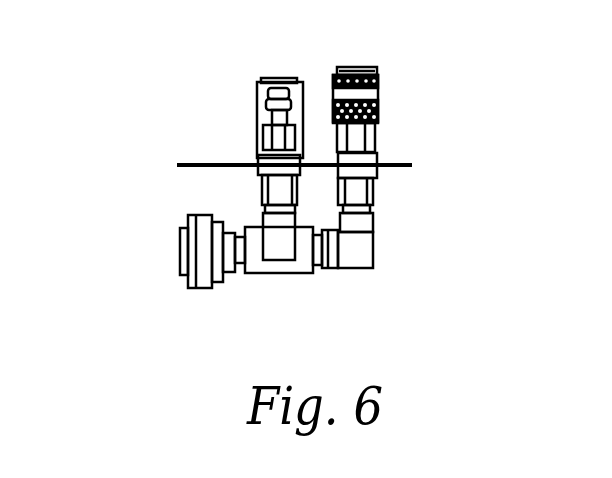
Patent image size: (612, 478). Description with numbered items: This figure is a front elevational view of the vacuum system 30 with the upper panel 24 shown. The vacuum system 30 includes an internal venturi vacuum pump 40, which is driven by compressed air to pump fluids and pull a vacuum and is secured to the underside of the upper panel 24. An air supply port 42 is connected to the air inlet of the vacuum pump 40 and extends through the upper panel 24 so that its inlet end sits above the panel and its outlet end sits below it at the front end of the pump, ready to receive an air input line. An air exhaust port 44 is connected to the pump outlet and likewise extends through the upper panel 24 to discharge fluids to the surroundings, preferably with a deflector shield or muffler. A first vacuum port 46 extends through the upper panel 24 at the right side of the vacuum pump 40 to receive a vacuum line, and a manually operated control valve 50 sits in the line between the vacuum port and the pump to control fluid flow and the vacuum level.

The vacuum system 30 is at (126, 172).
The upper panel 24 is at (400, 160).
The vacuum pump 40 is at (295, 273).
The air supply port 42 is at (260, 126).
The air exhaust port 44 is at (257, 100).
The first vacuum port 46 is at (378, 100).
The control valve 50 is at (378, 138).